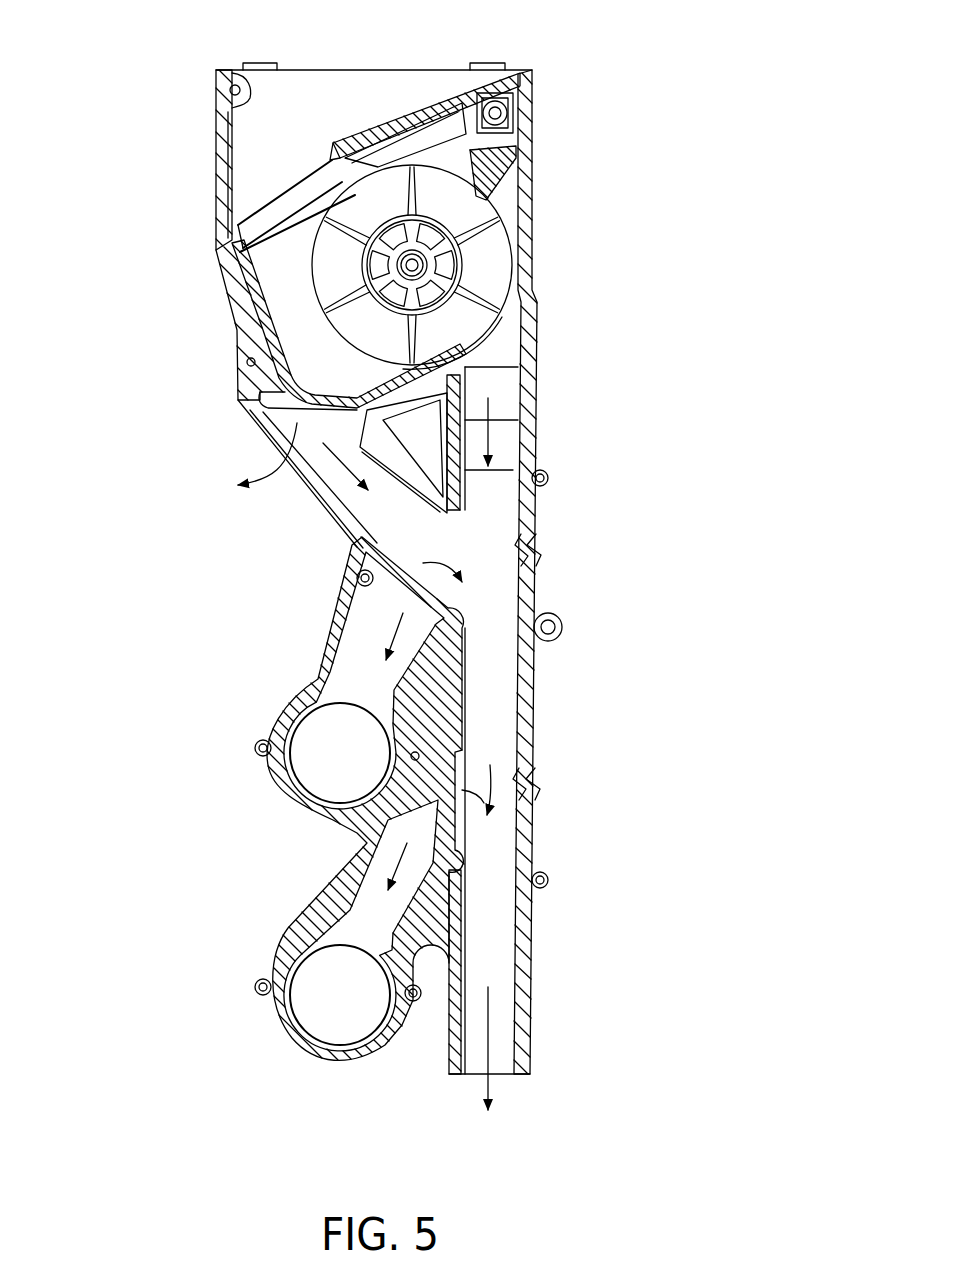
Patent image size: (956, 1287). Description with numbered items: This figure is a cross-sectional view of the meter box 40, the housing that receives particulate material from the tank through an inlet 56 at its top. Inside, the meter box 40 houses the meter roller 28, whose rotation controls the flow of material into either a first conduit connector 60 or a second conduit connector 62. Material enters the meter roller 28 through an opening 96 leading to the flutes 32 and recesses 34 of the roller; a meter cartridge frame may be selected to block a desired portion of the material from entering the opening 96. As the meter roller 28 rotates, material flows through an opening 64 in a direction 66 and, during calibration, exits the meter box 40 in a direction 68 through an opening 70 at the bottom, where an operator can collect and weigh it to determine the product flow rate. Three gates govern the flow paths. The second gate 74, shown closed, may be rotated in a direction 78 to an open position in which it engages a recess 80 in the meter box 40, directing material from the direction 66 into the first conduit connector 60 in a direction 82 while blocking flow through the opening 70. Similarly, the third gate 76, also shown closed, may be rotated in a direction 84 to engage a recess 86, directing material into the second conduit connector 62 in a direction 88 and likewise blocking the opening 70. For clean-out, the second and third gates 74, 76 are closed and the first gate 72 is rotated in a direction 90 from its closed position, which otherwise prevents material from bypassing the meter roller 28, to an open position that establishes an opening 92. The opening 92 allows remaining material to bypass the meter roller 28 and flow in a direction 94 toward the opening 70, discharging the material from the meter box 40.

The meter roller 28 is at (450, 207).
The flutes 32 is at (450, 140).
The recesses 34 is at (386, 228).
The meter box 40 is at (140, 242).
The inlet 56 is at (333, 118).
The first conduit connector 60 is at (300, 713).
The second conduit connector 62 is at (388, 1022).
The opening 64 is at (497, 350).
The direction 66 is at (490, 437).
The direction 68 is at (490, 1030).
The opening 70 is at (510, 1063).
The first gate 72 is at (268, 398).
The second gate 74 is at (410, 584).
The third gate 76 is at (447, 833).
The direction 78 is at (438, 568).
The recess 80 is at (526, 536).
The direction 82 is at (382, 640).
The direction 84 is at (483, 771).
The recess 86 is at (522, 784).
The direction 88 is at (398, 860).
The direction 90 is at (260, 478).
The opening 92 is at (325, 385).
The direction 94 is at (318, 478).
The opening 96 is at (313, 228).